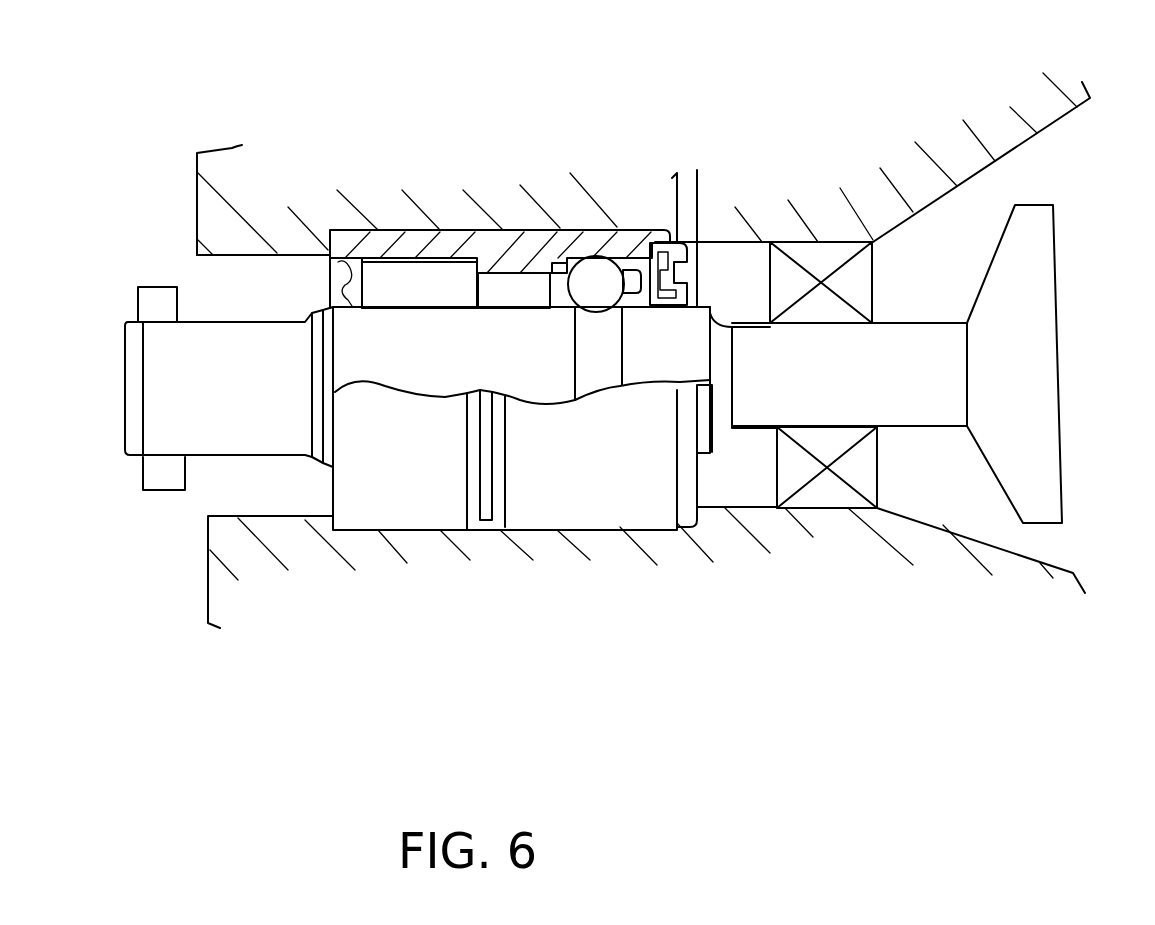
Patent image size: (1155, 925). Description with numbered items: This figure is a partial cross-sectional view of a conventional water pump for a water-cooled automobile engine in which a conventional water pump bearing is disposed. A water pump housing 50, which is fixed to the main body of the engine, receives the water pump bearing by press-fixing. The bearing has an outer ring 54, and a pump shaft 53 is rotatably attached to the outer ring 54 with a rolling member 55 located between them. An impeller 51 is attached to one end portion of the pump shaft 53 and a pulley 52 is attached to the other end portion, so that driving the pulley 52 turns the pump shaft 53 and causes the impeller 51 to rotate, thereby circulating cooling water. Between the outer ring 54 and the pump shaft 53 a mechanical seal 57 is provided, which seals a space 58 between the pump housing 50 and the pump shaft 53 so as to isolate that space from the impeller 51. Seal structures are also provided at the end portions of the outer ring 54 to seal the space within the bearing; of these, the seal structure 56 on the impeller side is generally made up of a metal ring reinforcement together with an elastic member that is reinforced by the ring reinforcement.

The water pump housing 50 is at (948, 157).
The impeller 51 is at (1032, 350).
The pulley 52 is at (152, 298).
The pump shaft 53 is at (773, 395).
The outer ring 54 is at (497, 245).
The rolling member 55 is at (598, 268).
The seal structure 56 is at (702, 275).
The mechanical seal 57 is at (827, 493).
The space 58 is at (737, 280).